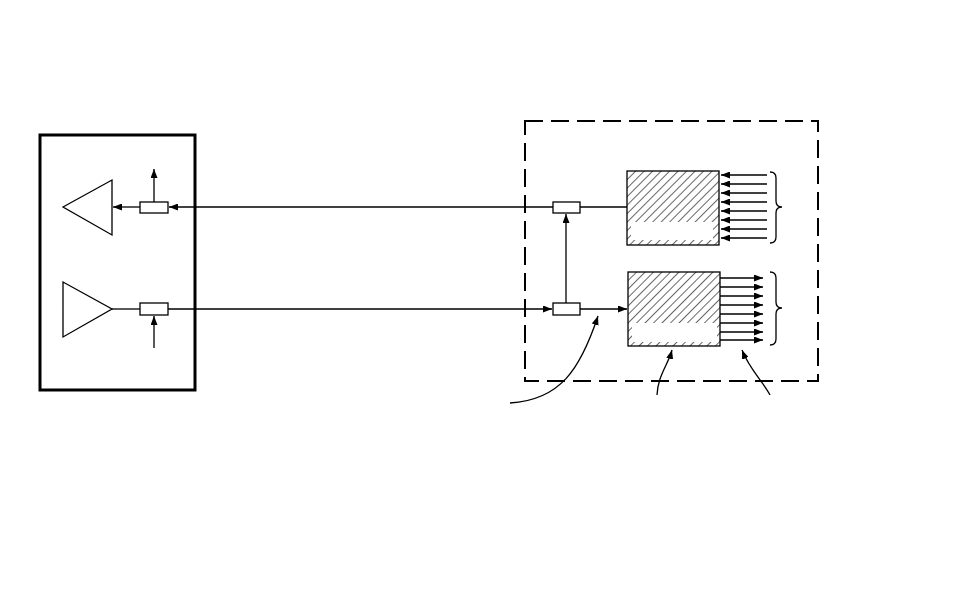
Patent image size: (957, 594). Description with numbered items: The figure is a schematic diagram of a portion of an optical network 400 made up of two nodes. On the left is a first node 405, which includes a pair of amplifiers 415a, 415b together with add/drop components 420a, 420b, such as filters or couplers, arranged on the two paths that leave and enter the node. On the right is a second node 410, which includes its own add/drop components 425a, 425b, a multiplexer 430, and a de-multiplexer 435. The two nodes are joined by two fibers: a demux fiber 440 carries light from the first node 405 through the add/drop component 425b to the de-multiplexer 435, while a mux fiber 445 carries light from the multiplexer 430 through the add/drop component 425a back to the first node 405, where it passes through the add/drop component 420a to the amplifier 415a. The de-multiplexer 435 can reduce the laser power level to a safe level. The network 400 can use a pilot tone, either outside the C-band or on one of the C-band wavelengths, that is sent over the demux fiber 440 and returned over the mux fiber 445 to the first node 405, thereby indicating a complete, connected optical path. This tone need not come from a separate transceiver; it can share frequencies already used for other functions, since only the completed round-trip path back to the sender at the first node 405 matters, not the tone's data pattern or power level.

The optical network 400 is at (314, 86).
The first node 405 is at (197, 357).
The second node 410 is at (707, 120).
The amplifier 415a is at (88, 193).
The amplifier 415b is at (88, 323).
The add/drop component 420a is at (163, 202).
The add/drop component 420b is at (163, 303).
The add/drop component 425a is at (558, 200).
The add/drop component 425b is at (558, 303).
The multiplexer 430 is at (647, 171).
The de-multiplexer 435 is at (645, 347).
The demux fiber 440 is at (308, 309).
The mux fiber 445 is at (308, 207).